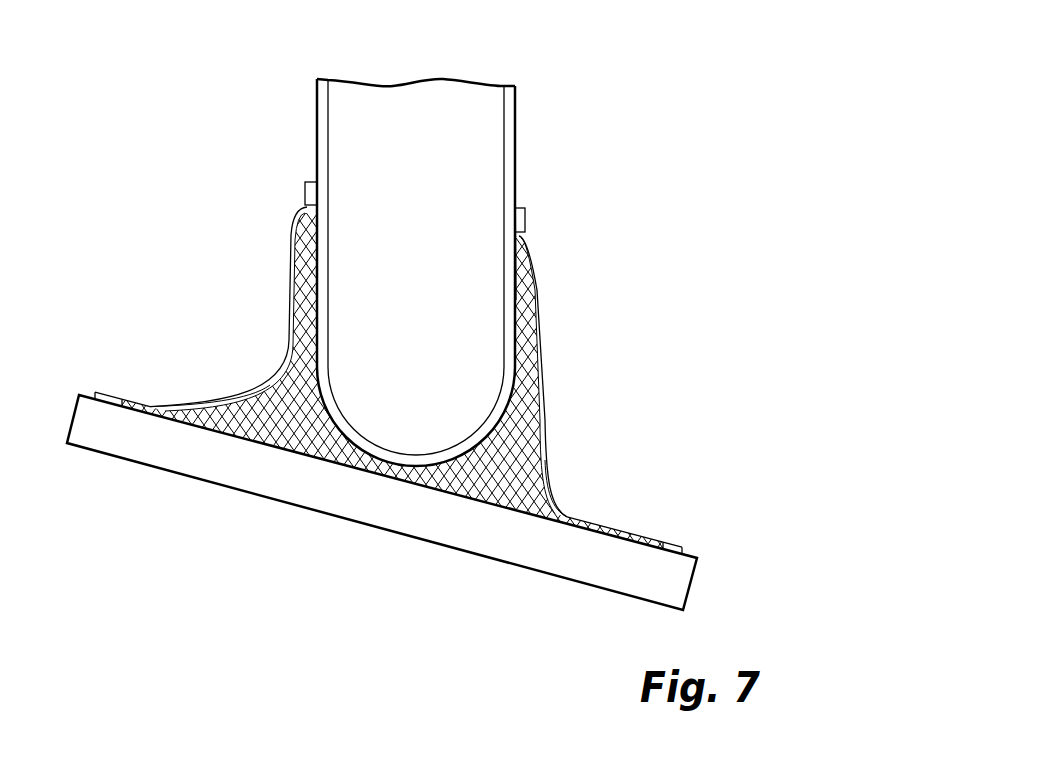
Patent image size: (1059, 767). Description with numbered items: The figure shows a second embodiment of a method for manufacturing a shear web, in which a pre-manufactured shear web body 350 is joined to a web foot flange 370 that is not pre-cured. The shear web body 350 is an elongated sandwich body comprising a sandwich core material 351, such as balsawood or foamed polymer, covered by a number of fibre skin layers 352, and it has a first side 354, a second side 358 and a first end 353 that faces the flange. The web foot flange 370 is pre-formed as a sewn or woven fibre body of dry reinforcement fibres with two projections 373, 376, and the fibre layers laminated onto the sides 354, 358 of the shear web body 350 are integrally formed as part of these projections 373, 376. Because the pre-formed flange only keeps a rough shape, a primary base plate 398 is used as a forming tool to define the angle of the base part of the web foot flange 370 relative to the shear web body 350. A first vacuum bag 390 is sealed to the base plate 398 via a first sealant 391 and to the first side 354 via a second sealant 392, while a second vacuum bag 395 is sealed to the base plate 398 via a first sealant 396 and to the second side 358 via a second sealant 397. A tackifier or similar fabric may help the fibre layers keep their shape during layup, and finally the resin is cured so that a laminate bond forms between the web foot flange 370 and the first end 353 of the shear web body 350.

The shear web body 350 is at (430, 235).
The sandwich core material 351 is at (487, 97).
The fibre skin layers 352 is at (512, 128).
The first end 353 is at (406, 464).
The first side 354 is at (316, 108).
The second side 358 is at (515, 170).
The web foot flange 370 is at (533, 432).
The projection 373 is at (298, 232).
The projection 376 is at (533, 262).
The first vacuum bag 390 is at (282, 375).
The first sealant 391 is at (95, 389).
The second sealant 392 is at (312, 183).
The second vacuum bag 395 is at (557, 498).
The first sealant 396 is at (678, 552).
The second sealant 397 is at (523, 217).
The primary base plate 398 is at (410, 528).